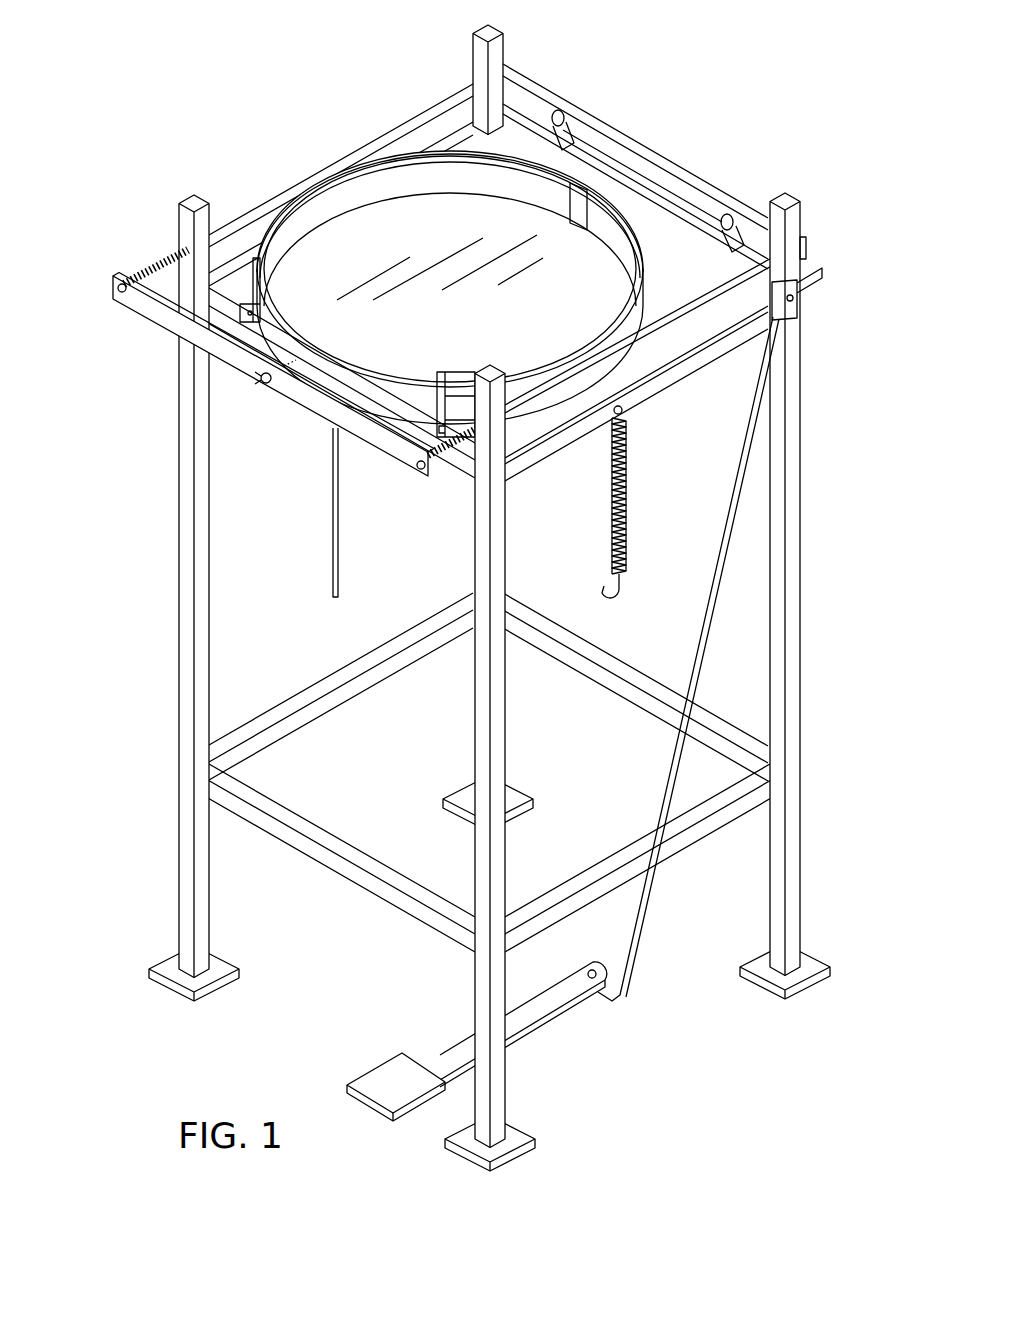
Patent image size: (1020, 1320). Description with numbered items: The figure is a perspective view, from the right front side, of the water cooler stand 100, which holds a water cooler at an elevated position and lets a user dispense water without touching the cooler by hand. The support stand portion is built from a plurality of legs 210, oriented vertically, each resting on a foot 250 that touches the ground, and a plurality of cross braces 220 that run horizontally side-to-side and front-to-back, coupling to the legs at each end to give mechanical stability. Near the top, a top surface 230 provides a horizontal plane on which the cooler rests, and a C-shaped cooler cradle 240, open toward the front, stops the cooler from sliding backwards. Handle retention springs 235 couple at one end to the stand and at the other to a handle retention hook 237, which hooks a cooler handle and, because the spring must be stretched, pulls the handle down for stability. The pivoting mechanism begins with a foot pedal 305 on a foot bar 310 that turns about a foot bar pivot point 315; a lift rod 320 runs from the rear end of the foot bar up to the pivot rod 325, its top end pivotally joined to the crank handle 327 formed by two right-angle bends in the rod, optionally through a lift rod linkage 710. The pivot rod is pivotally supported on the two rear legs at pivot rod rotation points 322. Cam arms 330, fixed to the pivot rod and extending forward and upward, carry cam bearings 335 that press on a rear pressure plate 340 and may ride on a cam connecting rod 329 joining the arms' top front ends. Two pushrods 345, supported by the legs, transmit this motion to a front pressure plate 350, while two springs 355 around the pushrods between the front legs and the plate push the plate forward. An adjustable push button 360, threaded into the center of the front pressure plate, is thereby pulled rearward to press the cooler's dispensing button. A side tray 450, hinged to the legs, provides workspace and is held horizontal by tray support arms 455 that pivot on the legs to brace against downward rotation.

The water cooler stand 100 is at (187, 75).
The plurality of legs 210 is at (768, 868).
The plurality of cross braces 220 is at (730, 807).
The top surface 230 is at (462, 145).
The handle retention springs 235 is at (628, 484).
The handle retention hook 237 is at (632, 600).
The cooler cradle 240 is at (395, 178).
The foot 250 is at (806, 985).
The foot pedal 305 is at (388, 1088).
The foot bar 310 is at (580, 1018).
The foot bar pivot point 315 is at (500, 1058).
The lift rod 320 is at (642, 938).
The pivot rod rotation points 322 is at (800, 283).
The pivot rod 325 is at (517, 100).
The crank handle 327 is at (795, 300).
The cam connecting rod 329 is at (620, 153).
The cam arms 330 is at (597, 130).
The cam bearings 335 is at (560, 122).
The rear pressure plate 340 is at (742, 200).
The pushrods 345 is at (325, 170).
The front pressure plate 350 is at (145, 300).
The springs 355 is at (162, 268).
The adjustable push button 360 is at (300, 362).
The side tray 450 is at (222, 398).
The tray support arms 455 is at (333, 505).
The lift rod linkage 710 is at (797, 258).